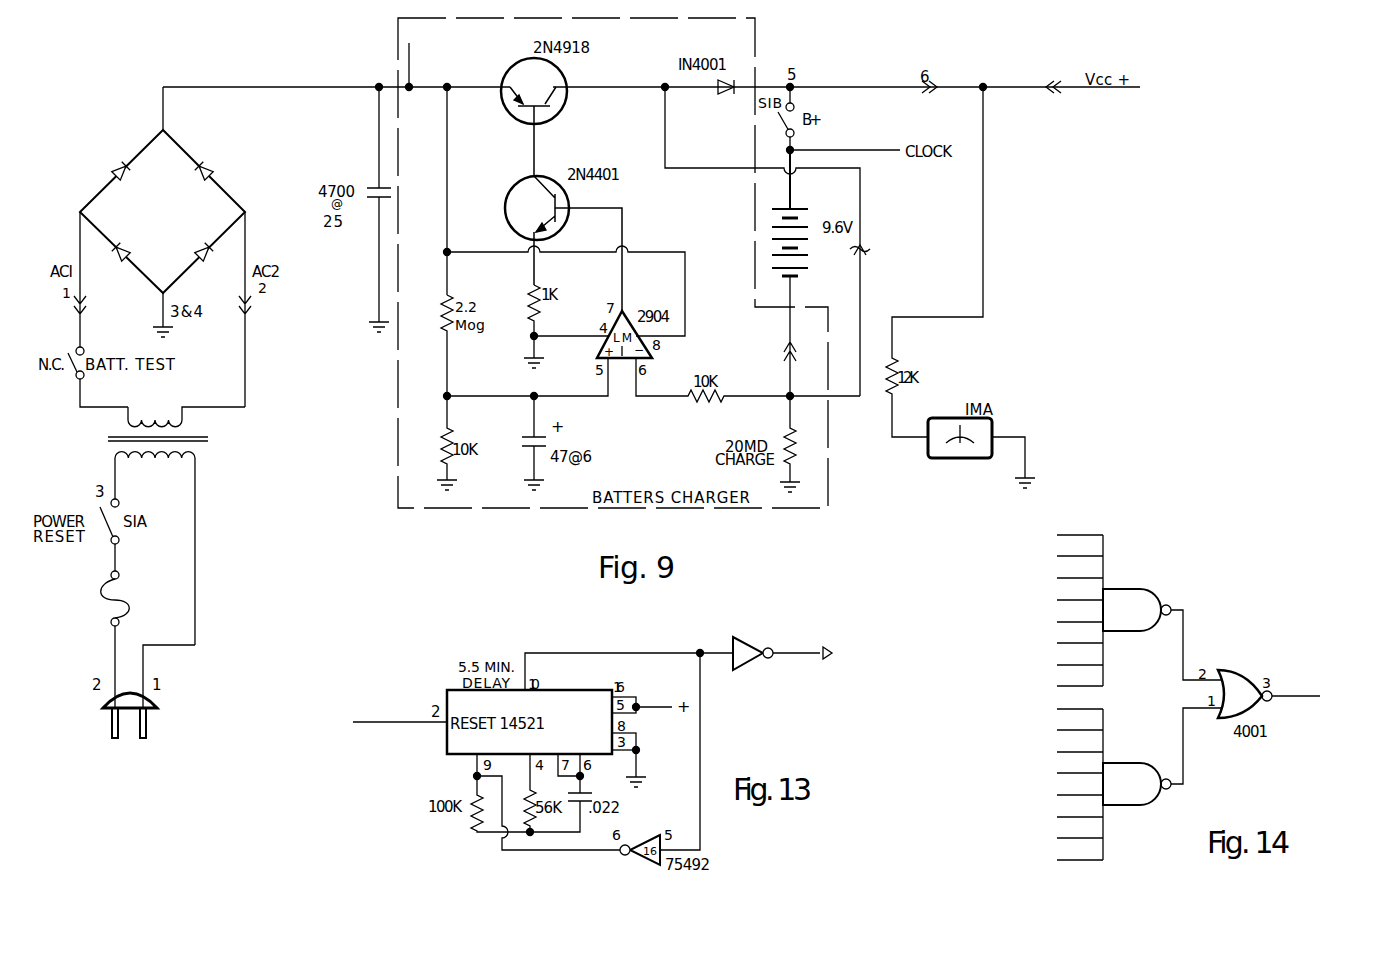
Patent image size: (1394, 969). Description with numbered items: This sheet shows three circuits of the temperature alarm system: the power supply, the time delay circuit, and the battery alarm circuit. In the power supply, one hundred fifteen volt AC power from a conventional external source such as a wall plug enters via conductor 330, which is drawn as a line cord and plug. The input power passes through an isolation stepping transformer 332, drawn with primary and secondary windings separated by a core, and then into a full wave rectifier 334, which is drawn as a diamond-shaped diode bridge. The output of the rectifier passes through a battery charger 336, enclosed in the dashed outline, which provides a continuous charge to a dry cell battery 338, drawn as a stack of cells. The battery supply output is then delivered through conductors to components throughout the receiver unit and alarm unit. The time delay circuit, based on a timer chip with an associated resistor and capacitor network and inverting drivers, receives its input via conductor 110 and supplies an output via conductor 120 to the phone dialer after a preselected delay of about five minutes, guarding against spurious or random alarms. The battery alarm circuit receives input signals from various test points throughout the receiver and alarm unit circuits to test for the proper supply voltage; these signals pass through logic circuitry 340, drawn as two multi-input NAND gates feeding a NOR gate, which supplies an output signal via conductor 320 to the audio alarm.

In FIG. 9, the full wave rectifier 334 is at (268, 172).
In FIG. 9, the isolation stepping transformer 332 is at (212, 417).
In FIG. 9, the conductor 330 is at (143, 663).
In FIG. 9, the dry cell battery 338 is at (808, 208).
In FIG. 9, the battery charger 336 is at (462, 508).
In FIG. 13, the conductor 110 is at (396, 724).
In FIG. 13, the conductor 120 is at (813, 624).
In FIG. 14, the logic circuitry 340 is at (1256, 604).
In FIG. 14, the conductor 320 is at (1291, 692).